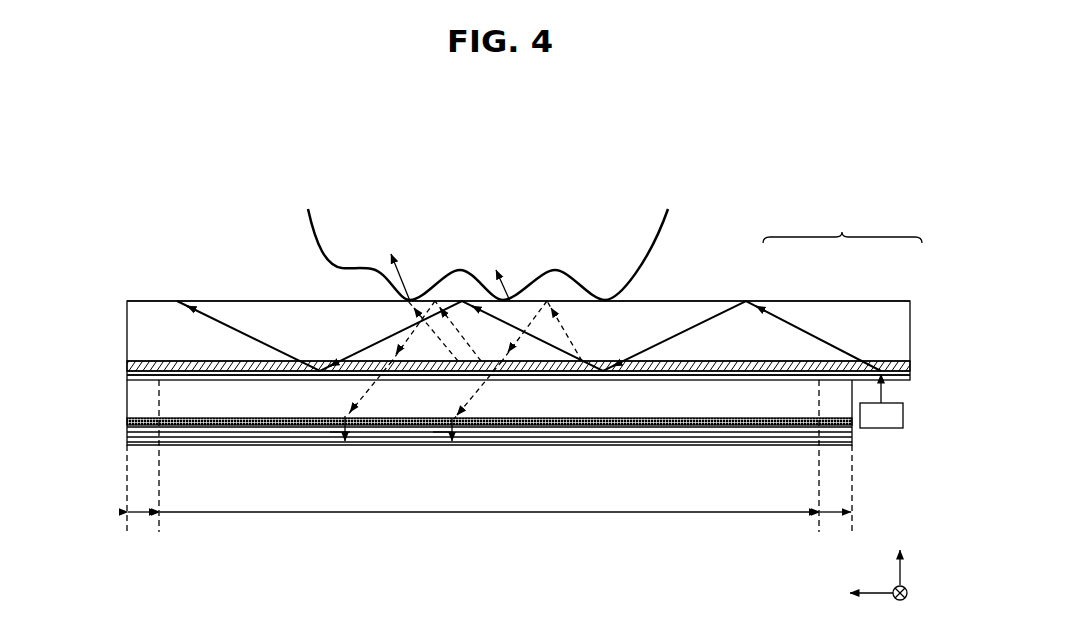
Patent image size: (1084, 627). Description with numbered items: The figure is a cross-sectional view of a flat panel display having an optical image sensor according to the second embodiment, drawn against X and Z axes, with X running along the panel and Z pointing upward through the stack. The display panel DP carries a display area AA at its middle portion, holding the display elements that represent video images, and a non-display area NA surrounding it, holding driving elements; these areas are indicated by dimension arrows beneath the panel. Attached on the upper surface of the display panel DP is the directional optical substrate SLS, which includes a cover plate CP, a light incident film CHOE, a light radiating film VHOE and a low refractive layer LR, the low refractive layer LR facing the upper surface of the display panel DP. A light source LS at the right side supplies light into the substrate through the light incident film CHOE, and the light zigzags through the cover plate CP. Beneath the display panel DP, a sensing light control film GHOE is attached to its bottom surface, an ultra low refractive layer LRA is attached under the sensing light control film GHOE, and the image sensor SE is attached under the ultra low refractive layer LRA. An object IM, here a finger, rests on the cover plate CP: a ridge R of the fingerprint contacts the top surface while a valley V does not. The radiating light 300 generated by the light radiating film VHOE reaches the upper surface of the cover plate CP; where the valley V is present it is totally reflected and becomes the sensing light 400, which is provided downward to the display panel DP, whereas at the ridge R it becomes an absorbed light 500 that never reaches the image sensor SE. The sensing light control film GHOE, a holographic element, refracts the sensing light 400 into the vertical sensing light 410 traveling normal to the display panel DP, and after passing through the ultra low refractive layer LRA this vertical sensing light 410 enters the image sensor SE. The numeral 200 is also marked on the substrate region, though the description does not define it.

The light guide / cover plate portion 200 is at (700, 313).
The radiating light 300 is at (565, 320).
The sensing light 400 is at (360, 402).
The vertical sensing light 410 is at (340, 428).
The absorbed light 500 is at (400, 268).
The object IM is at (658, 233).
The valley V is at (460, 266).
The ridge R is at (605, 297).
The directional optical substrate SLS is at (842, 223).
The cover plate CP is at (778, 310).
The light radiating film VHOE is at (815, 358).
The low refractive layer LR is at (856, 364).
The light incident film CHOE is at (896, 374).
The display panel DP is at (127, 394).
The sensing light control film GHOE is at (127, 422).
The ultra low refractive layer LRA is at (127, 430).
The image sensor SE is at (127, 438).
The light source LS is at (904, 415).
The non-display area NA is at (489, 526).
The display area AA is at (489, 526).
The X axis X is at (868, 593).
The Z axis Z is at (901, 551).